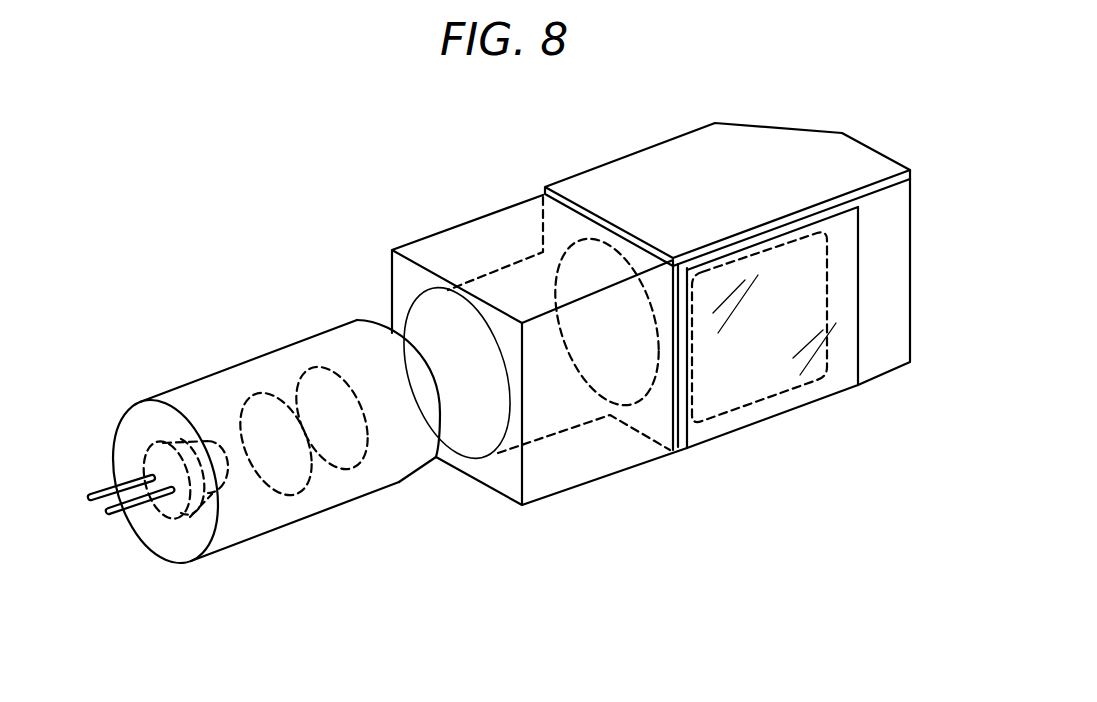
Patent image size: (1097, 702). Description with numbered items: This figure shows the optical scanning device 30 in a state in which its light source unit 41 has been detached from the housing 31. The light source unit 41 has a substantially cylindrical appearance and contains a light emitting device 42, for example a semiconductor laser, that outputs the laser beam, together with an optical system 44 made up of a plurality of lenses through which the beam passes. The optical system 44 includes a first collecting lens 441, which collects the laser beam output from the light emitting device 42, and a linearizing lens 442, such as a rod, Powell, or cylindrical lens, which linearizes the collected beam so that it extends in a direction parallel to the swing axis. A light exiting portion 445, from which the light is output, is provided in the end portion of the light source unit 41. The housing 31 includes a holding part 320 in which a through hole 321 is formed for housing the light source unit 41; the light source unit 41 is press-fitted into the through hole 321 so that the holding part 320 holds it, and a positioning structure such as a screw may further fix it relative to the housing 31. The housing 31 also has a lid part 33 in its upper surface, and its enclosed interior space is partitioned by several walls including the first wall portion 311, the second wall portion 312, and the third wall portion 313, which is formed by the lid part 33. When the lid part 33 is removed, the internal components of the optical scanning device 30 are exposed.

The optical scanning device 30 is at (280, 143).
The housing 31 is at (878, 345).
The first wall portion 311 is at (743, 385).
The second wall portion 312 is at (555, 228).
The third wall portion 313 is at (727, 174).
The lid part 33 is at (660, 181).
The holding part 320 is at (593, 447).
The through hole 321 is at (498, 455).
The light source unit 41 is at (160, 392).
The light emitting device 42 is at (213, 435).
The optical system 44 is at (314, 238).
The first collecting lens 441 is at (274, 393).
The linearizing lens 442 is at (333, 367).
The light exiting portion 445 is at (428, 367).